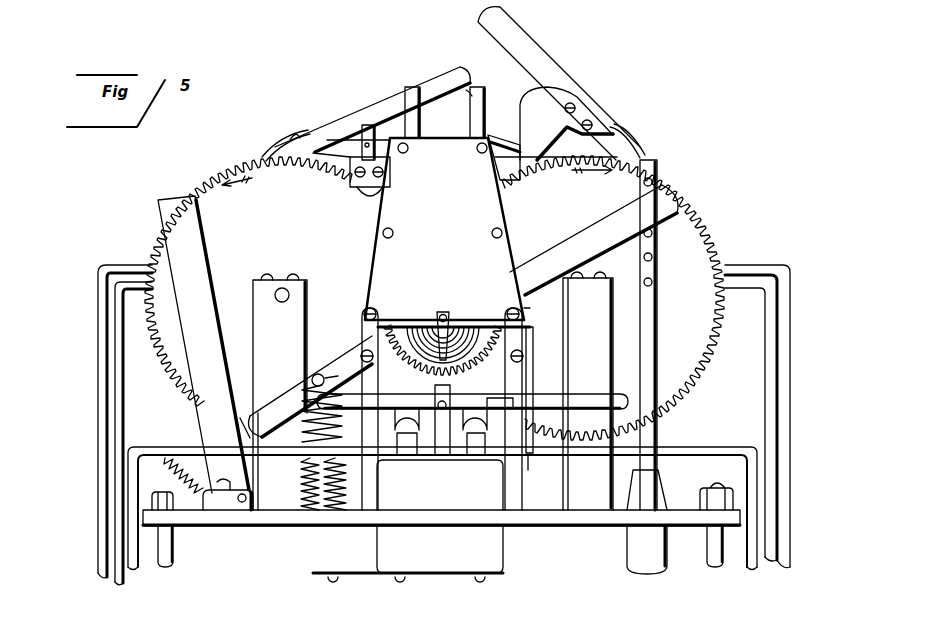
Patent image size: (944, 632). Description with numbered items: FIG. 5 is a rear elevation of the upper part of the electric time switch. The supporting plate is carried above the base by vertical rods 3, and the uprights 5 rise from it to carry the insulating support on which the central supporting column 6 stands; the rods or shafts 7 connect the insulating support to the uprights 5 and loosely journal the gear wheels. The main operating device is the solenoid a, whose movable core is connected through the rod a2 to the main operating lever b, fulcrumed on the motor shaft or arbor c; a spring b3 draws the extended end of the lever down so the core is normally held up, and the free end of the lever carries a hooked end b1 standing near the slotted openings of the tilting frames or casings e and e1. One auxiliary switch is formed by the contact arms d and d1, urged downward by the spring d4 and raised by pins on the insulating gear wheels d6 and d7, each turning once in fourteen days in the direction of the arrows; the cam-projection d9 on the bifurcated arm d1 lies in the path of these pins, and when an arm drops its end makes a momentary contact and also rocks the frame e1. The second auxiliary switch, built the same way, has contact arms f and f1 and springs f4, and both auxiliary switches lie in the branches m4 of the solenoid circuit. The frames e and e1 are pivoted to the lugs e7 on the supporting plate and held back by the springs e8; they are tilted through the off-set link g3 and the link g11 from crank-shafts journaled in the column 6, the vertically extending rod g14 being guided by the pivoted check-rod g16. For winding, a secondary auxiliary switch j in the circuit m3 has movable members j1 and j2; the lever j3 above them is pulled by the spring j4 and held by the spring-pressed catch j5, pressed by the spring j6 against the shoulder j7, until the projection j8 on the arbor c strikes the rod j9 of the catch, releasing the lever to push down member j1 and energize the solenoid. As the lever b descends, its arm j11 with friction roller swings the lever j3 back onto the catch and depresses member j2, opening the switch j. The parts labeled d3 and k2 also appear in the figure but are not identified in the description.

The vertical rods 3 is at (165, 568).
The uprights 5 is at (433, 391).
The supporting column 6 is at (442, 358).
The rods or shafts 7 is at (288, 295).
The solenoid a is at (622, 545).
The rod a2 is at (680, 430).
The main operating lever b is at (680, 195).
The hooked end b1 is at (247, 415).
The spring b3 is at (310, 508).
The motor shaft c is at (445, 318).
The contact arm d is at (570, 80).
The bifurcated contact arm d1 is at (352, 180).
The cam d3 is at (567, 95).
The spring d4 is at (270, 152).
The gear wheel d6 is at (613, 298).
The gear wheel d7 is at (248, 281).
The cam-projection d9 is at (372, 208).
The tilting frame e is at (468, 85).
The tilting frame e1 is at (204, 344).
The ears or lugs e7 is at (222, 505).
The springs e8 is at (178, 468).
The contact arm f is at (393, 110).
The contact arm f1 is at (510, 165).
The springs f4 is at (292, 140).
The off-set link g3 is at (262, 520).
The link g11 is at (320, 520).
The vertically-extending rod g14 is at (365, 128).
The check-rods g16 is at (383, 140).
The secondary auxiliary switch j is at (421, 360).
The movable member j1 is at (408, 462).
The movable member j2 is at (477, 455).
The lever j3 is at (635, 400).
The spring j4 is at (350, 515).
The spring-pressed catch j5 is at (540, 400).
The spring j6 is at (532, 428).
The projecting shoulder j7 is at (505, 405).
The projection j8 is at (420, 328).
The projecting rod j9 is at (482, 328).
The projecting arm j11 is at (528, 313).
The catch k2 is at (258, 520).
The circuit m3 is at (136, 450).
The branches m4 is at (100, 392).